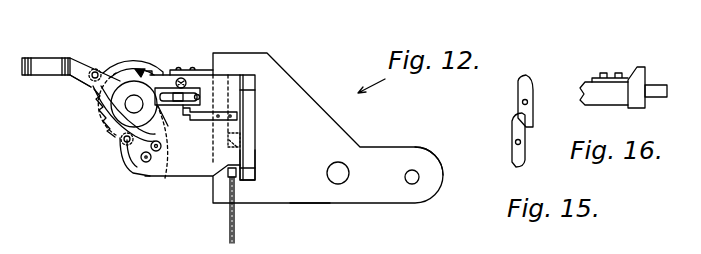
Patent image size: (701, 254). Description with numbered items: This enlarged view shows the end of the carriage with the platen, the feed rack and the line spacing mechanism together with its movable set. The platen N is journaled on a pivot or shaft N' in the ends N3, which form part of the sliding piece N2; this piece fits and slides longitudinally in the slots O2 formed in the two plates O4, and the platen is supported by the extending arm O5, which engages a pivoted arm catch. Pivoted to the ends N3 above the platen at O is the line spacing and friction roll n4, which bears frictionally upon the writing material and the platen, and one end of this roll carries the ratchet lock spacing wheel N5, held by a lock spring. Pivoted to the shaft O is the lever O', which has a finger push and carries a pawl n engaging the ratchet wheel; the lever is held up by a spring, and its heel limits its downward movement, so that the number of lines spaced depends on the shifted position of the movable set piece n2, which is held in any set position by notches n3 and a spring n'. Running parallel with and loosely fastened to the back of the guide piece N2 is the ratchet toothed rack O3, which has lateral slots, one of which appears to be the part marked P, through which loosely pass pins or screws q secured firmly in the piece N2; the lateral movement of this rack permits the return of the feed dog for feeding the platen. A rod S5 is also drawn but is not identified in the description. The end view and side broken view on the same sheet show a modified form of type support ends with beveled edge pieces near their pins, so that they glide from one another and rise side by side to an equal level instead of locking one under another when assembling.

The lever O' is at (105, 87).
The shaft O is at (186, 109).
The ends N3 is at (163, 83).
The sliding piece N2 is at (235, 78).
The slots O2 is at (256, 82).
The ratchet toothed rack O3 is at (255, 95).
The plates O4 is at (309, 191).
The extending arm O5 is at (427, 168).
The lateral slot P is at (255, 157).
The pawl n is at (63, 90).
The movable set piece n2 is at (205, 59).
The notches n3 is at (183, 106).
The spring n' is at (233, 129).
The platen N is at (123, 120).
The ratchet lock spacing wheel N5 is at (112, 128).
The line spacing and friction roll n4 is at (121, 140).
The pivot or shaft N' is at (143, 176).
The pins or screws q is at (226, 148).
The rod S5 is at (229, 222).